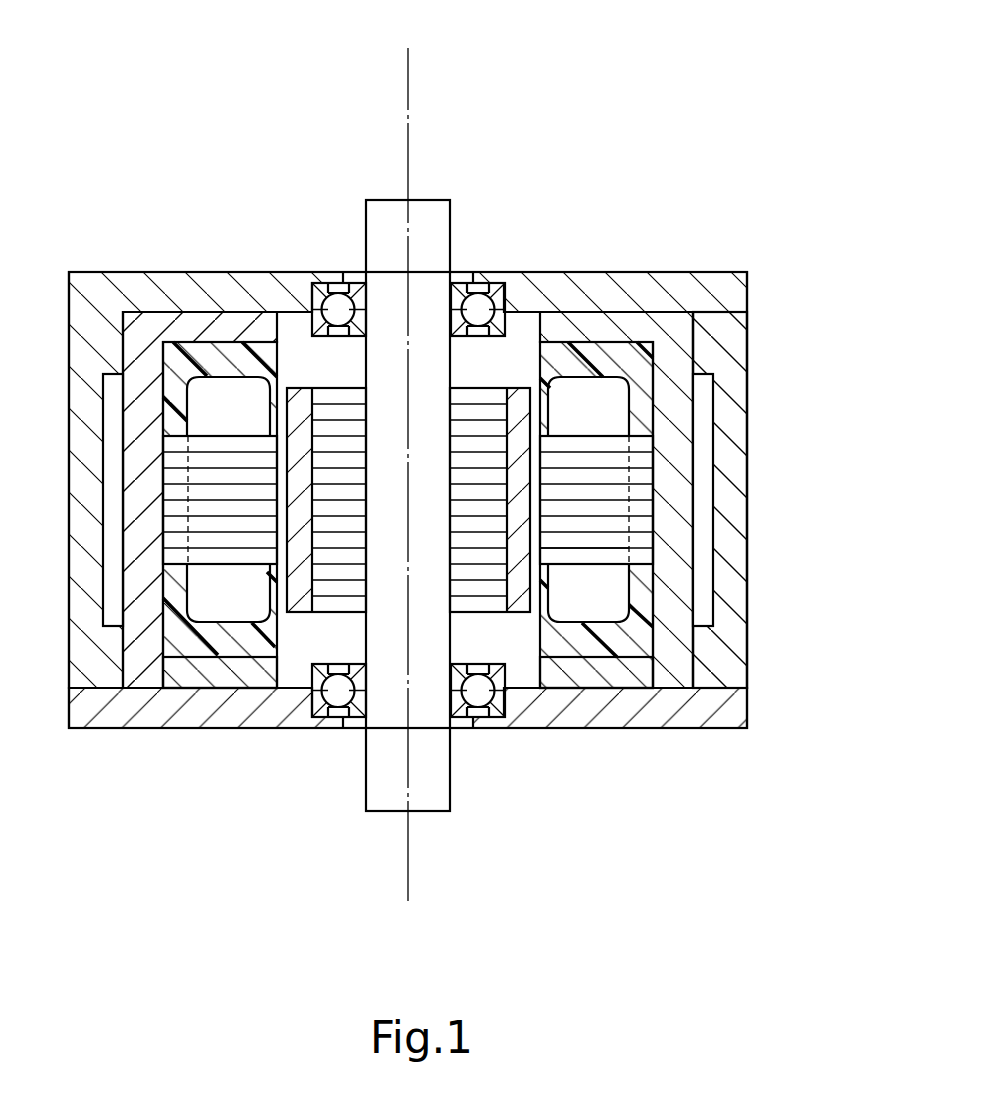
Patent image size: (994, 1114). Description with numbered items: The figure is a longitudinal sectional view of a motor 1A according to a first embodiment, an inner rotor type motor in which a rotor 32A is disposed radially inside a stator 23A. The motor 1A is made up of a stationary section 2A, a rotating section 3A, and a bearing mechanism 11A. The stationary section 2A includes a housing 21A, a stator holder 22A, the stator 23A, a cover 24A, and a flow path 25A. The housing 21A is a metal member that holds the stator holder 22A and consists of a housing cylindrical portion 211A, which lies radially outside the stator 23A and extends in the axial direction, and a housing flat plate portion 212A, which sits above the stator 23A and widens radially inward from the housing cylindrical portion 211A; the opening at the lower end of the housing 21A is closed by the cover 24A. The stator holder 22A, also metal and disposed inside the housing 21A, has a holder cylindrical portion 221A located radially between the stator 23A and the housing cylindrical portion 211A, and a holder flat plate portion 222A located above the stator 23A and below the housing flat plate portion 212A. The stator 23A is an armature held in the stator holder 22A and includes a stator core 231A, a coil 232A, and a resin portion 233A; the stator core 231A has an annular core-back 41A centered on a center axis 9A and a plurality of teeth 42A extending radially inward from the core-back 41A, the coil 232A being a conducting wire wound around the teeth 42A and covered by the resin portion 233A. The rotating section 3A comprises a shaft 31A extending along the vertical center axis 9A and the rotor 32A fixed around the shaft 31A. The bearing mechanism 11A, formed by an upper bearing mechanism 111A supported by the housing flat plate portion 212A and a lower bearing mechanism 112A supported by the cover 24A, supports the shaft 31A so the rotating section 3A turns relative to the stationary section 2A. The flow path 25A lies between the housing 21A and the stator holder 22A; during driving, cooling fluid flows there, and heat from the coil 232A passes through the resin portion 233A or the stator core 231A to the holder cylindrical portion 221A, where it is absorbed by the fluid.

The motor 1A is at (629, 112).
The stationary section 2A is at (432, 512).
The rotating section 3A is at (391, 467).
The center axis 9A is at (408, 870).
The bearing mechanism 11A is at (435, 538).
The upper bearing mechanism 111A is at (478, 305).
The lower bearing mechanism 112A is at (478, 700).
The housing 21A is at (668, 417).
The housing cylindrical portion 211A is at (735, 363).
The housing flat plate portion 212A is at (648, 297).
The stator holder 22A is at (176, 424).
The holder cylindrical portion 221A is at (140, 386).
The holder flat plate portion 222A is at (203, 327).
The stator 23A is at (373, 598).
The stator core 231A is at (200, 533).
The coil 232A is at (227, 598).
The resin portion 233A is at (250, 640).
The cover 24A is at (732, 713).
The flow path 25A is at (705, 488).
The shaft 31A is at (379, 218).
The rotor 32A is at (320, 397).
The core-back 41A is at (638, 557).
The teeth 42A is at (590, 557).